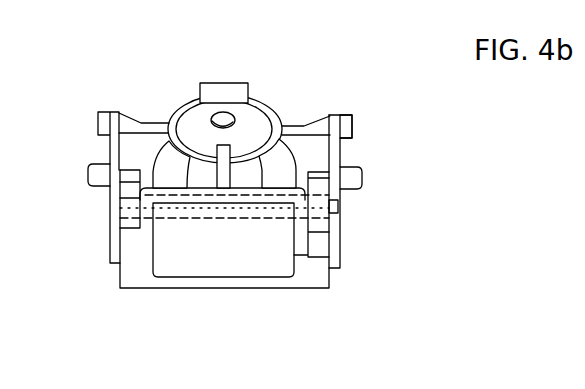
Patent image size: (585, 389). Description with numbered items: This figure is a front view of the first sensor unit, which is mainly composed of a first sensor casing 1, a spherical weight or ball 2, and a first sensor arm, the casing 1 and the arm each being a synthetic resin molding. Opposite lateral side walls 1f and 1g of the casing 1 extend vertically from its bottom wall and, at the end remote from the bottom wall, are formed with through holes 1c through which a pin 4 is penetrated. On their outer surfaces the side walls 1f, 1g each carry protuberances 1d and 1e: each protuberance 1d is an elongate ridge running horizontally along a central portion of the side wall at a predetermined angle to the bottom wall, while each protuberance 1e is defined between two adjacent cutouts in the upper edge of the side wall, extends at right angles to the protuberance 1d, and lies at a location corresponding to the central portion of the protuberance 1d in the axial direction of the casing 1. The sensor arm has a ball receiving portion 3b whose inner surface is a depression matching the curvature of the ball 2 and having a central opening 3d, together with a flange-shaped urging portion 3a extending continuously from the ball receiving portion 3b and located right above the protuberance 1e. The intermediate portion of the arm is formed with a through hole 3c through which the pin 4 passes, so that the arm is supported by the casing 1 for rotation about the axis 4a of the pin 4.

The first sensor casing 1 is at (133, 280).
The through holes 1c is at (315, 217).
The protuberances 1d is at (86, 176).
The protuberances 1e is at (353, 125).
The lateral side wall 1f is at (108, 148).
The lateral side wall 1g is at (343, 150).
The spherical weight or ball 2 is at (297, 127).
The urging portion 3a is at (226, 84).
The ball receiving portion 3b is at (283, 157).
The through hole 3c is at (223, 210).
The central opening 3d is at (205, 128).
The pin 4 is at (261, 212).
The axis 4a is at (349, 209).